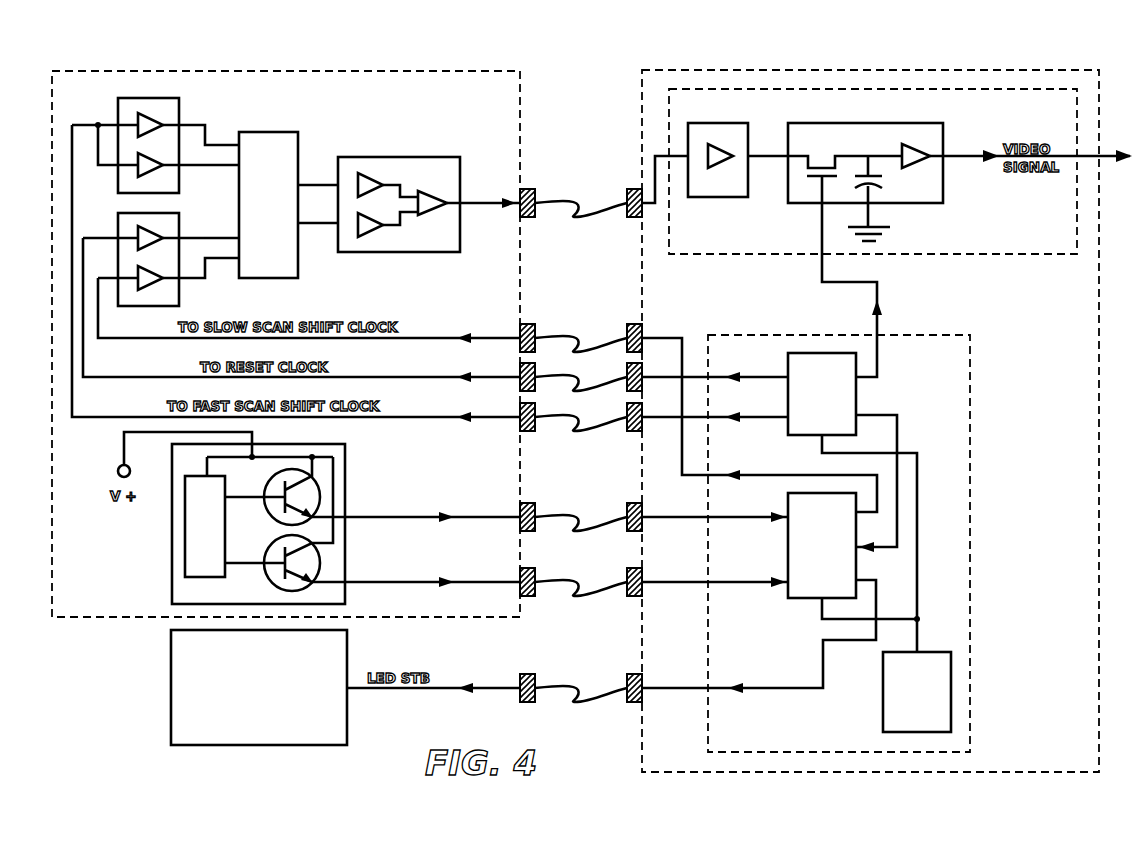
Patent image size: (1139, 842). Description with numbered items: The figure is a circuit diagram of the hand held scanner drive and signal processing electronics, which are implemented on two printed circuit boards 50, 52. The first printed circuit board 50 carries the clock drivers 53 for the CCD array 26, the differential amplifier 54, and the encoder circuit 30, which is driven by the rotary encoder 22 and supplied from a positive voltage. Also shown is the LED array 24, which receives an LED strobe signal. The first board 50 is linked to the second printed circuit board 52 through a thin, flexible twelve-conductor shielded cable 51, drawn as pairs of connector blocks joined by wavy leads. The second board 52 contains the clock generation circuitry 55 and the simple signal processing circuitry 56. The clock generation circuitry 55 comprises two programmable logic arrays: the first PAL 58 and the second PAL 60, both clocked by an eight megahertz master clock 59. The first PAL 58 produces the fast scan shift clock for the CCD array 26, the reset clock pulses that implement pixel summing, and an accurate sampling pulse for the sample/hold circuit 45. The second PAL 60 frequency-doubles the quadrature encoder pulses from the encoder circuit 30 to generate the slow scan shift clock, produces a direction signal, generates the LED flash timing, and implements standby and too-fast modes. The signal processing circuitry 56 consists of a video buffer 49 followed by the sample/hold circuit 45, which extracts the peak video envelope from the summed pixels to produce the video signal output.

The rotary encoder 22 is at (185, 530).
The LED array 24 is at (171, 676).
The CCD array 26 is at (270, 132).
The encoder circuit 30 is at (260, 524).
The sample/hold circuit 45 is at (943, 183).
The video buffer 49 is at (725, 197).
The first printed circuit board 50 is at (330, 70).
The shielded cable 51 is at (566, 120).
The second printed circuit board 52 is at (835, 70).
The clock drivers 53 is at (180, 111).
The differential amplifier 54 is at (405, 157).
The clock generation circuitry 55 is at (750, 335).
The signal processing circuitry 56 is at (980, 254).
The first programmable logic array 58 is at (822, 394).
The master clock 59 is at (883, 713).
The second programmable logic array 60 is at (822, 545).